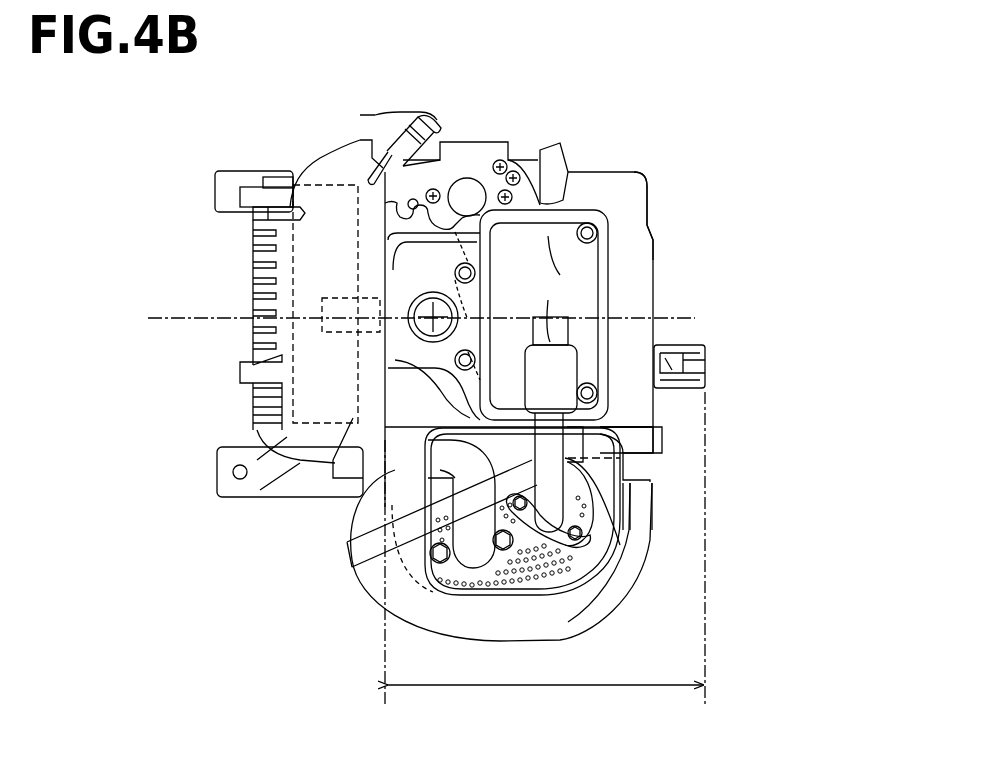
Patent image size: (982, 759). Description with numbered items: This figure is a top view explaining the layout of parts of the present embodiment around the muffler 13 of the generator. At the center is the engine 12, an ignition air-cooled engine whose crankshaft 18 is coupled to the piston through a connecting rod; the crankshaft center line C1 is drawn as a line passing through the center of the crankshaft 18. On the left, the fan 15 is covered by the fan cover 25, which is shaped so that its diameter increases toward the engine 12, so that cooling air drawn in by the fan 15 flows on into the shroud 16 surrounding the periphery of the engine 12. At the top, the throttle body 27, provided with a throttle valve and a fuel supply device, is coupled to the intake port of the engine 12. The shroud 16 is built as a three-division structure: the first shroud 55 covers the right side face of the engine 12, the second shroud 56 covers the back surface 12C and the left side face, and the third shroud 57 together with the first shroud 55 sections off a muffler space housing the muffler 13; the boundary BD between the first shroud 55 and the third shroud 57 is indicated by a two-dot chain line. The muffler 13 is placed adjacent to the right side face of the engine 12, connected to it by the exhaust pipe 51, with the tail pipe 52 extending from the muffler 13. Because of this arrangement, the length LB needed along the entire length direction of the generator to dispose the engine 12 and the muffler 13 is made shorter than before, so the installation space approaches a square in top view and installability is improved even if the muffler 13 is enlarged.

The engine 12 is at (578, 217).
The back surface 12C is at (647, 200).
The muffler 13 is at (596, 556).
The fan 15 is at (277, 200).
The shroud 16 is at (795, 367).
The crankshaft 18 is at (340, 302).
The fan cover 25 is at (282, 203).
The throttle body 27 is at (477, 140).
The exhaust pipe 51 is at (473, 527).
The tail pipe 52 is at (556, 492).
The first shroud 55 is at (662, 443).
The second shroud 56 is at (649, 223).
The third shroud 57 is at (655, 521).
The crankshaft center line C1 is at (403, 316).
The boundary BD is at (345, 545).
The length LB is at (546, 548).